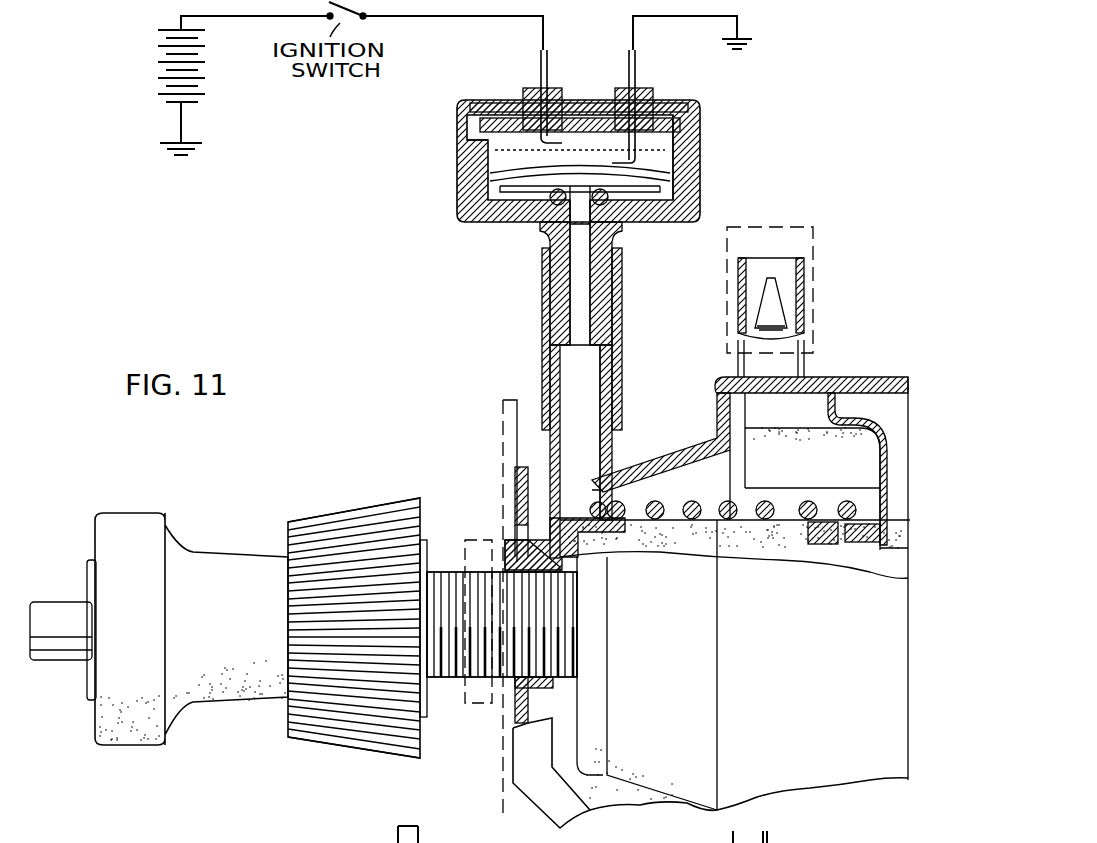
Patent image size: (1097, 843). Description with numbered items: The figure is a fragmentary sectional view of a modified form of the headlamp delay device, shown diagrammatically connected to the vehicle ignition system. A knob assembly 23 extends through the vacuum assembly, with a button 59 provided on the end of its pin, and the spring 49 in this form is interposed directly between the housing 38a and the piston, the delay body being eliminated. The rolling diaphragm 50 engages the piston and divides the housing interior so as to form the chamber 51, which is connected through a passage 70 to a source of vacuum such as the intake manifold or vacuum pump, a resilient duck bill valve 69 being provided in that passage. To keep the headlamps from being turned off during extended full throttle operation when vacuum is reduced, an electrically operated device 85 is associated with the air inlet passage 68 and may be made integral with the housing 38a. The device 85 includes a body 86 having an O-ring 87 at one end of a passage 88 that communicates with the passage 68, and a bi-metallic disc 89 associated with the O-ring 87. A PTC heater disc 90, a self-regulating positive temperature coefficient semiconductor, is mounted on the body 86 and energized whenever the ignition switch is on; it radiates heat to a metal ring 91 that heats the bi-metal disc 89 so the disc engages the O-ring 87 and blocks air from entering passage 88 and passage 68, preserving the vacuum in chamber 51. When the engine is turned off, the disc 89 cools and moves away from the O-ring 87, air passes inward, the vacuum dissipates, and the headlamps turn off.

The knob assembly 23 is at (215, 528).
The button 59 is at (53, 602).
The housing 38a is at (662, 543).
The spring 49 is at (655, 500).
The rolling diaphragm 50 is at (882, 407).
The chamber 51 is at (780, 428).
The passage 68 is at (550, 368).
The duck bill valve 69 is at (782, 302).
The passage 70 is at (798, 272).
The electrically operated device 85 is at (705, 176).
The body 86 is at (688, 200).
The O-ring 87 is at (545, 228).
The passage 88 is at (590, 236).
The bi-metallic disc 89 is at (522, 189).
The PTC heater disc 90 is at (558, 145).
The metal ring 91 is at (628, 160).